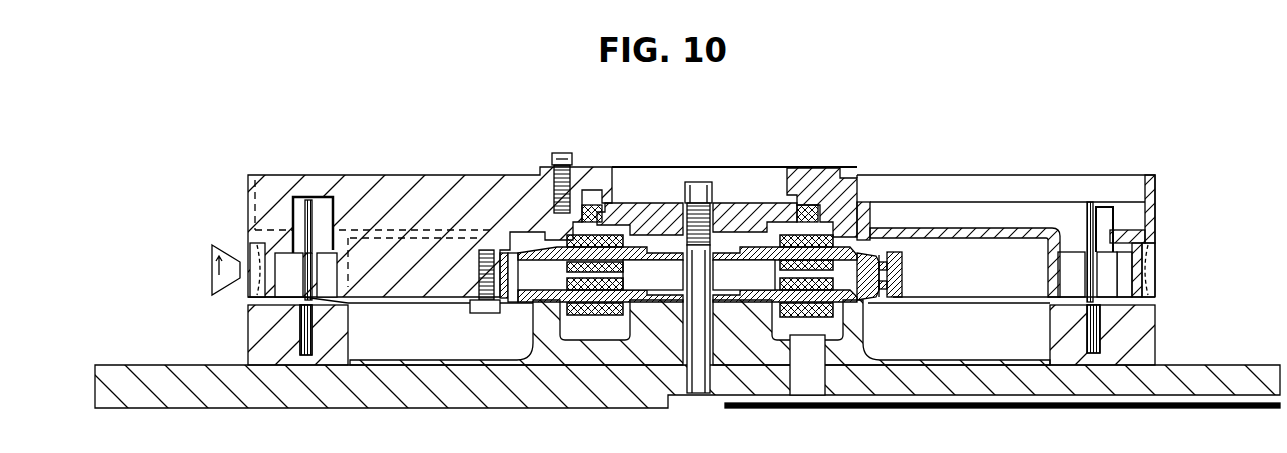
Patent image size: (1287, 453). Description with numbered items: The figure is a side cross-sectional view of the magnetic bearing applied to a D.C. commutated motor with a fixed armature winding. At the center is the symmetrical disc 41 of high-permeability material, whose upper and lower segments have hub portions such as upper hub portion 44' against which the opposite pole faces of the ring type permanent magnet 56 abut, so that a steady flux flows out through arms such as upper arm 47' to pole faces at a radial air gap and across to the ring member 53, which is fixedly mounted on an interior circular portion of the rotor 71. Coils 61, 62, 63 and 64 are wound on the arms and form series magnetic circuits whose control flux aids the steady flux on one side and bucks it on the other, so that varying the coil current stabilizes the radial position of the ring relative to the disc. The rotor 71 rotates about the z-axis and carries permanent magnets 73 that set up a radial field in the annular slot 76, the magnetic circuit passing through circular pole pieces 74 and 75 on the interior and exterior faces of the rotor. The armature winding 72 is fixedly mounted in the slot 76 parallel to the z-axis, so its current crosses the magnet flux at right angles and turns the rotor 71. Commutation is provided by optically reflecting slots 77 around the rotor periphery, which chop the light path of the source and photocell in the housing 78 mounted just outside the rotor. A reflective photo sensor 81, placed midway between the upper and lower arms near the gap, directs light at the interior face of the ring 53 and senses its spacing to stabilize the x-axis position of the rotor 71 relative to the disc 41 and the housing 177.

The disc 41 is at (704, 328).
The upper hub portion 44' is at (495, 229).
The upper arm 47' is at (802, 214).
The ring member 53 is at (904, 264).
The ring type permanent magnet 56 is at (647, 266).
The coil 61 is at (560, 240).
The coil 62 is at (812, 204).
The coil 63 is at (806, 317).
The coil 64 is at (590, 316).
The rotor 71 is at (390, 176).
The armature winding 72 is at (306, 352).
The permanent magnets 73 is at (301, 205).
The circular pole piece 74 is at (333, 200).
The circular pole piece 75 is at (276, 254).
The annular slot 76 is at (293, 296).
The optically reflecting slots 77 is at (250, 248).
The housing 78 is at (226, 288).
The reflective photo sensor 81 is at (882, 292).
The housing 177 is at (422, 410).